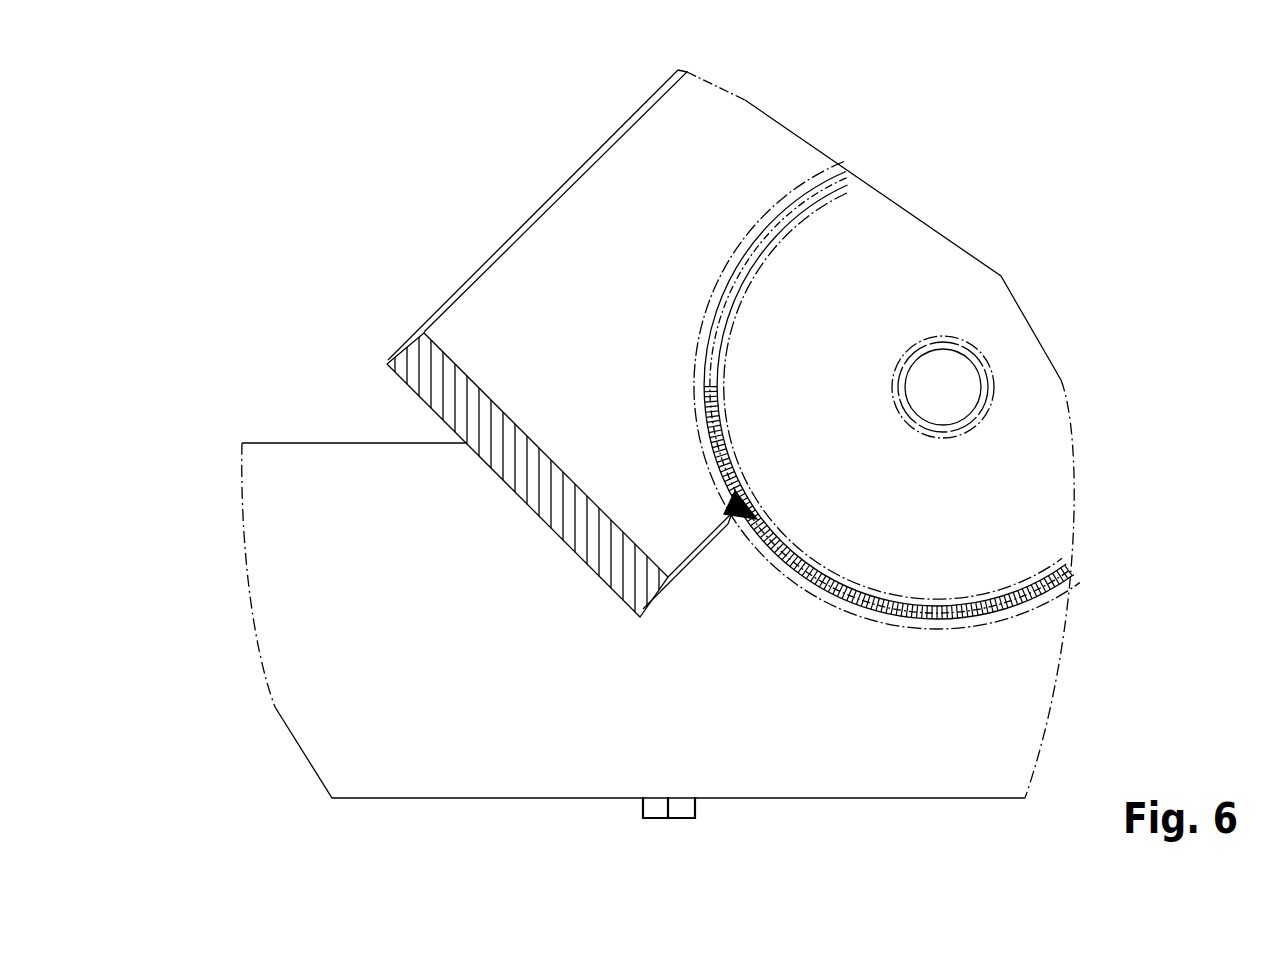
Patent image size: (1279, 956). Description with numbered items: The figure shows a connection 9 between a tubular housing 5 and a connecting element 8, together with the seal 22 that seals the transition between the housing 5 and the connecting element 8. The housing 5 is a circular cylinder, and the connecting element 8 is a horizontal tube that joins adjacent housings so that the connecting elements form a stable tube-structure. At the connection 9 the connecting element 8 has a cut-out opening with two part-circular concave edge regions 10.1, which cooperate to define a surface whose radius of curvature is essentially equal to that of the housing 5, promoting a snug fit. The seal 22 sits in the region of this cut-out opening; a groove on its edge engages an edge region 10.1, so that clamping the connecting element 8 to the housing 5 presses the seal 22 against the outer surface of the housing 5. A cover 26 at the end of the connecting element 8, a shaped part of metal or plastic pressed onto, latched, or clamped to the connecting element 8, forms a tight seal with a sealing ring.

The tubular housing 5 is at (1024, 435).
The connecting element 8 is at (540, 208).
The connection 9 is at (610, 465).
The seal 22 is at (745, 492).
The cover 26 is at (545, 487).
The part-circular concave edge region 10.1 is at (745, 522).